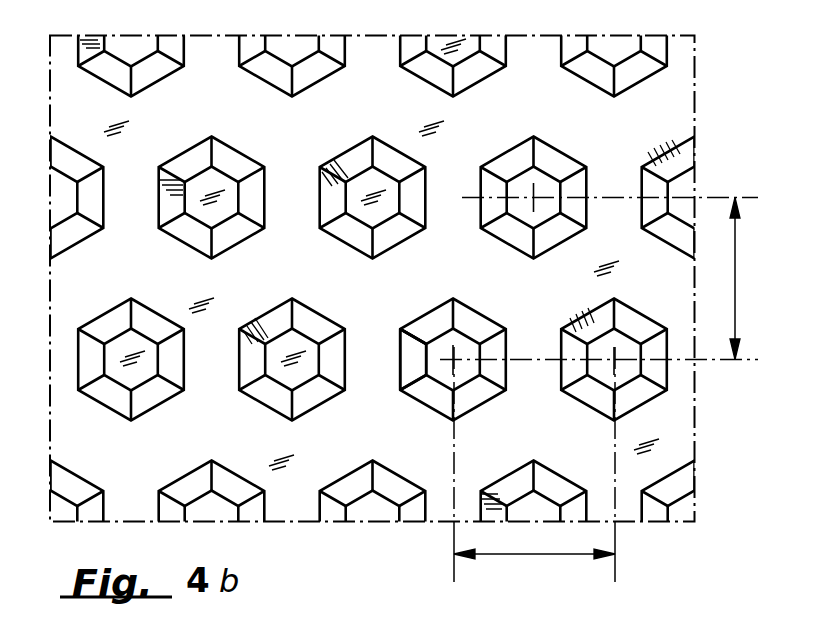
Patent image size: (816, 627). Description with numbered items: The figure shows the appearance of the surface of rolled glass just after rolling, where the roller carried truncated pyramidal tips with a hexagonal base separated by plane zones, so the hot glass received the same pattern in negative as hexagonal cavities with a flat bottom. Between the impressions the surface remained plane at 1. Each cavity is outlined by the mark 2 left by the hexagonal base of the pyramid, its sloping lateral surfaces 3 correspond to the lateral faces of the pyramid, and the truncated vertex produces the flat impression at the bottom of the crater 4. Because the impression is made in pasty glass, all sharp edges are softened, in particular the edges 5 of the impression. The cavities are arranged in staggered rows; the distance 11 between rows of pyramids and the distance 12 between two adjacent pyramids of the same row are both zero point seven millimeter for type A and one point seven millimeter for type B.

The plane surface 1 is at (652, 117).
The pyramid base mark 2 is at (398, 347).
The lateral surfaces 3 is at (413, 365).
The crater bottom 4 is at (465, 350).
The edges of the impression 5 is at (412, 343).
The distance between rows of pyramids 11 is at (735, 288).
The distance between two adjacent pyramids of the same row 12 is at (503, 556).